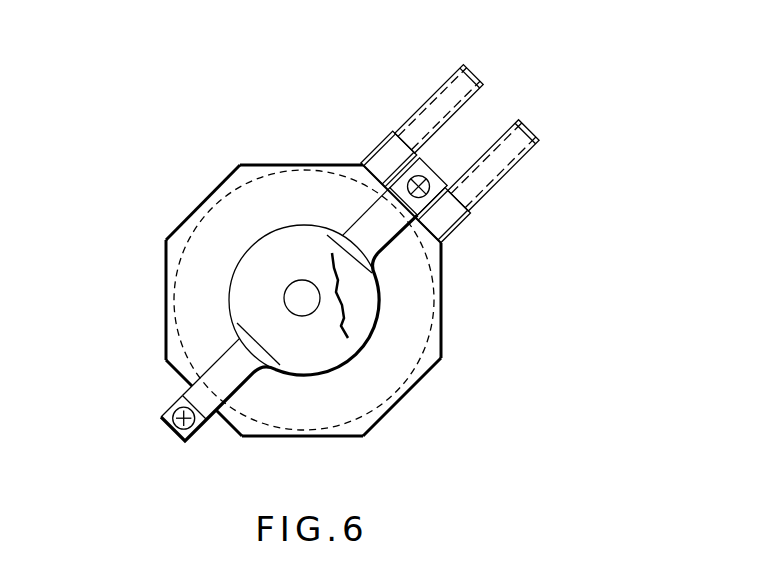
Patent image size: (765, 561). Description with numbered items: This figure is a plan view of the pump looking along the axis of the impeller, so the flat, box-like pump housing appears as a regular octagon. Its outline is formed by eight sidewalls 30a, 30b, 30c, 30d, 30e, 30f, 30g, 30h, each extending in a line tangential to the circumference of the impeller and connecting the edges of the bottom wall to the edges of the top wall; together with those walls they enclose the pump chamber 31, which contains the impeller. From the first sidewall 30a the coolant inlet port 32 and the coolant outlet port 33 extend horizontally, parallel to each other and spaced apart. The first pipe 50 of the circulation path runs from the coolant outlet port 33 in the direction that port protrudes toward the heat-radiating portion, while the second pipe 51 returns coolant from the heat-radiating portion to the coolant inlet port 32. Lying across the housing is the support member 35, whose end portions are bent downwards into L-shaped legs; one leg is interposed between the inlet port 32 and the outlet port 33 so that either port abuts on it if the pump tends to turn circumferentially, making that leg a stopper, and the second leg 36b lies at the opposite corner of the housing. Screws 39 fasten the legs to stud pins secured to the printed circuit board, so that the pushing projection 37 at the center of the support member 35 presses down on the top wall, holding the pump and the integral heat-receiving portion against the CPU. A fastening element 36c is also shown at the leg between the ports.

The first sidewall 30a is at (372, 183).
The second sidewall 30b is at (444, 300).
The third sidewall 30c is at (407, 396).
The fourth sidewall 30d is at (305, 437).
The fifth sidewall 30e is at (218, 420).
The sixth sidewall 30f is at (165, 300).
The seventh sidewall 30g is at (208, 198).
The eighth sidewall 30h is at (278, 163).
The pump chamber 31 is at (425, 322).
The coolant inlet port 32 is at (450, 214).
The coolant outlet port 33 is at (388, 159).
The support member 35 is at (267, 252).
The second leg 36b is at (172, 411).
The screw 36c is at (428, 162).
The pushing projection 37 is at (303, 304).
The screws 39 is at (164, 420).
The first pipe 50 is at (447, 82).
The second pipe 51 is at (530, 153).